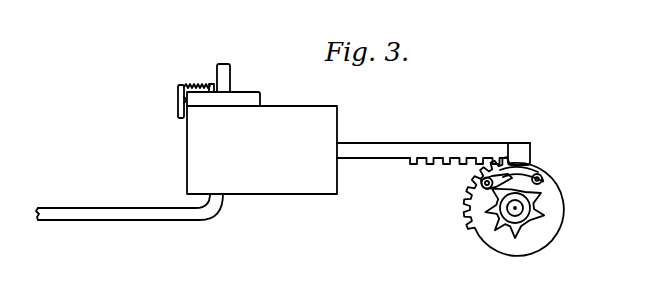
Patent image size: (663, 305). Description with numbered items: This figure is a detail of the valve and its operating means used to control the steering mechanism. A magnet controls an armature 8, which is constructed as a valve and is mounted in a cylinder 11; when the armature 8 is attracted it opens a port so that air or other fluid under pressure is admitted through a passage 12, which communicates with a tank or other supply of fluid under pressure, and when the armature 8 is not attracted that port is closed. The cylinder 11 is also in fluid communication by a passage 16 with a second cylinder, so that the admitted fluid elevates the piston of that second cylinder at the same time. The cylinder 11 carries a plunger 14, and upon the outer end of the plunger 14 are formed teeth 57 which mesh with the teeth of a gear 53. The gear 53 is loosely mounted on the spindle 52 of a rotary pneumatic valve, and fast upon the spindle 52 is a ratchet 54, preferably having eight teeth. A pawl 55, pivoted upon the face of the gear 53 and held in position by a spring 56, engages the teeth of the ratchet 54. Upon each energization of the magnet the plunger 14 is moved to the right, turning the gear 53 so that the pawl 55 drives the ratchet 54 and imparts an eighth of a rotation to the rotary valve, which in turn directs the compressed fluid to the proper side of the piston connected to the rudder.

The armature 8 is at (177, 113).
The cylinder 11 is at (293, 179).
The passage 12 is at (225, 81).
The plunger 14 is at (370, 147).
The passage 16 is at (129, 201).
The spindle 52 is at (517, 208).
The gear 53 is at (466, 210).
The ratchet 54 is at (534, 221).
The pawl 55 is at (514, 160).
The spring 56 is at (503, 175).
The teeth 57 is at (449, 165).